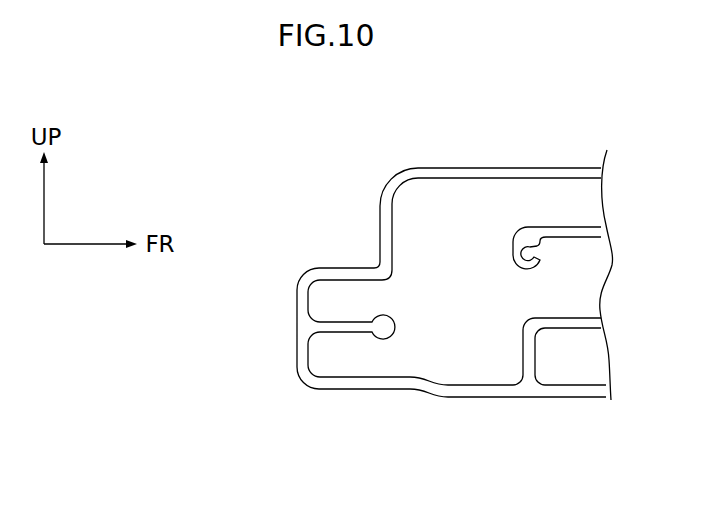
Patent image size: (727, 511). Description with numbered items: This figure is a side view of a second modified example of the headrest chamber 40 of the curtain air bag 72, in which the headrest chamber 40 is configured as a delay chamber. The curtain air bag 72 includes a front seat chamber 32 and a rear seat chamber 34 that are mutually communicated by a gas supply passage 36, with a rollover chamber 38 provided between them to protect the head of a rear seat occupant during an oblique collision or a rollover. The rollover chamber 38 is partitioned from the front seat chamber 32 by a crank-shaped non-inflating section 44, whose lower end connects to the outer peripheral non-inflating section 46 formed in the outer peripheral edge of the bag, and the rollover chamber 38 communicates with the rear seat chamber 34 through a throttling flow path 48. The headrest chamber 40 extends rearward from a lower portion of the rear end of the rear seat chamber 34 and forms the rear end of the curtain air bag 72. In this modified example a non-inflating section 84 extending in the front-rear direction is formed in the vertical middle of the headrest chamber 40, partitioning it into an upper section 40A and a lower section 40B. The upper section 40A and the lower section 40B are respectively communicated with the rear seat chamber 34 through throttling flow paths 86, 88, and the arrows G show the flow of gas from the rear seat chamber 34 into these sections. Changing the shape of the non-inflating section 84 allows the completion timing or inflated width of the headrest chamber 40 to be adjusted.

The front seat chamber 32 is at (573, 372).
The rear seat chamber 34 is at (463, 213).
The gas supply passage 36 is at (565, 190).
The rollover chamber 38 is at (597, 257).
The headrest chamber 40 is at (212, 292).
The upper section 40A is at (318, 300).
The lower section 40B is at (318, 357).
The non-inflating section 44 is at (582, 318).
The outer peripheral non-inflating section 46 is at (404, 185).
The throttling flow path 48 is at (527, 290).
The curtain air bag 72 is at (462, 404).
The non-inflating section 84 is at (340, 315).
The throttling flow path 86 is at (372, 272).
The throttling flow path 88 is at (373, 368).
The arrows G is at (392, 355).